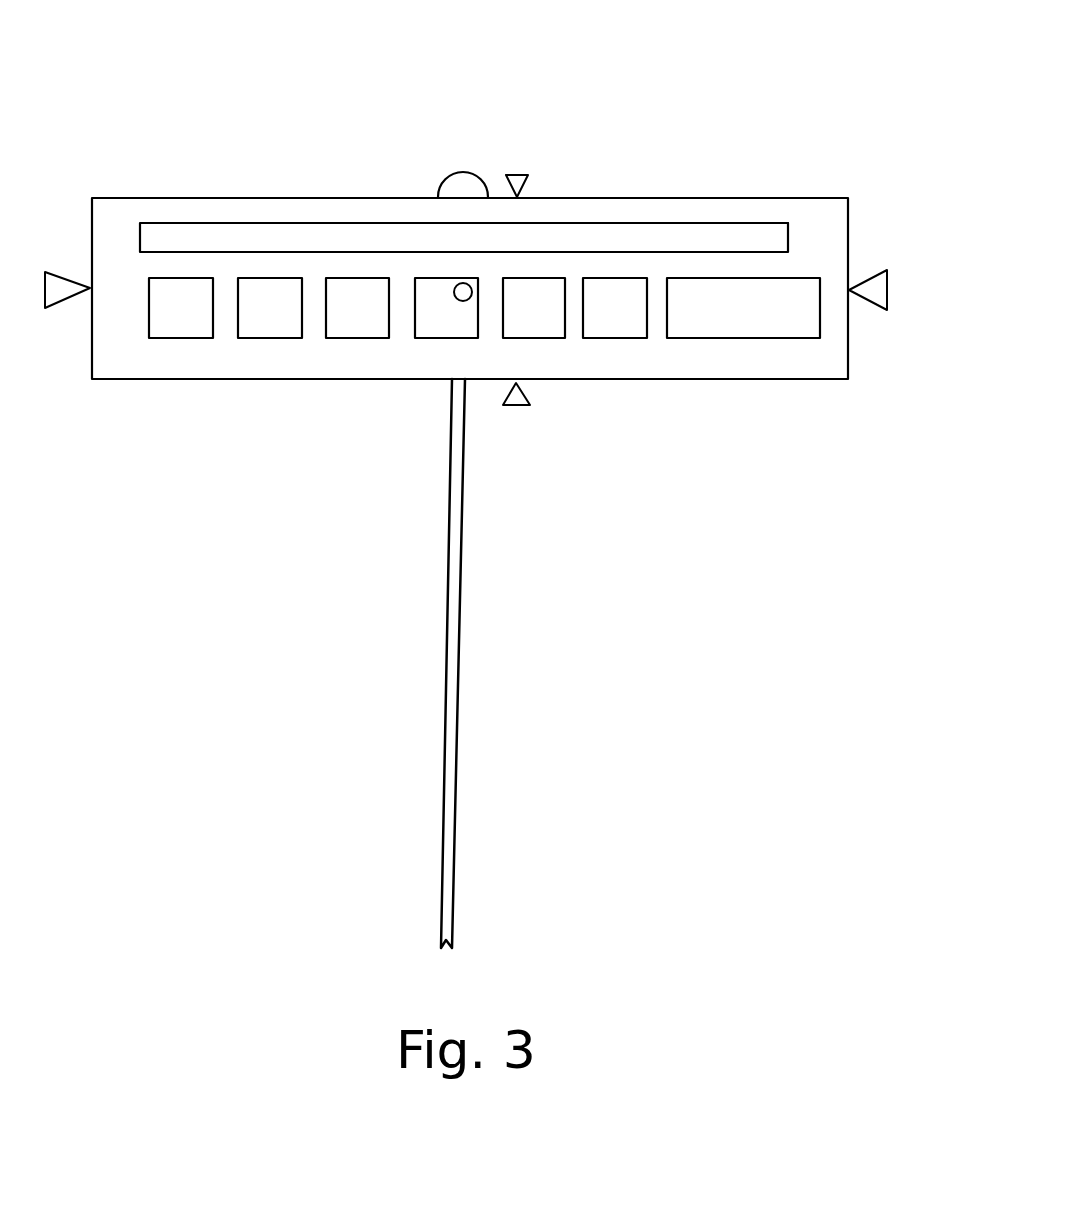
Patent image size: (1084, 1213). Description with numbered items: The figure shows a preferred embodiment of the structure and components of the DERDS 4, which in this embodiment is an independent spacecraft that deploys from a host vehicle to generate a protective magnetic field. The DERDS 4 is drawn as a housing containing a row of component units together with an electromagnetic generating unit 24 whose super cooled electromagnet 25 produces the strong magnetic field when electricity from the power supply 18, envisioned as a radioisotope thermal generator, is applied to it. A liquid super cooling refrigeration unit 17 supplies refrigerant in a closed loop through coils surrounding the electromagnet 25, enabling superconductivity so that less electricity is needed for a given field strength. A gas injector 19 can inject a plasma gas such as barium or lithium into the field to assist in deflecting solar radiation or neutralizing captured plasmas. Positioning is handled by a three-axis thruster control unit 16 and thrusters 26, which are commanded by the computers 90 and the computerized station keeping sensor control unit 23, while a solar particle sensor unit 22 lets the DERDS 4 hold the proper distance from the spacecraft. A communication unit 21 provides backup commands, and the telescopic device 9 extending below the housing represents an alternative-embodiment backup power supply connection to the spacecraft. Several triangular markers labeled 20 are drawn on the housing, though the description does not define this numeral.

The DERDS 4 is at (176, 197).
The telescopic device 9 is at (448, 655).
The 3-axis thruster control unit 16 is at (358, 277).
The super cooling refrigeration unit 17 is at (553, 338).
The power supply 18 is at (808, 338).
The gas injector 19 is at (183, 338).
The directional indicators 20 is at (52, 310).
The communication unit 21 is at (633, 338).
The solar particle sensor unit 22 is at (455, 172).
The computerized station keeping sensor control unit 23 is at (455, 302).
The electromagnetic generating unit 24 is at (686, 222).
The super cooled electromagnet 25 is at (636, 240).
The thrusters 26 is at (525, 173).
The computers 90 is at (277, 338).